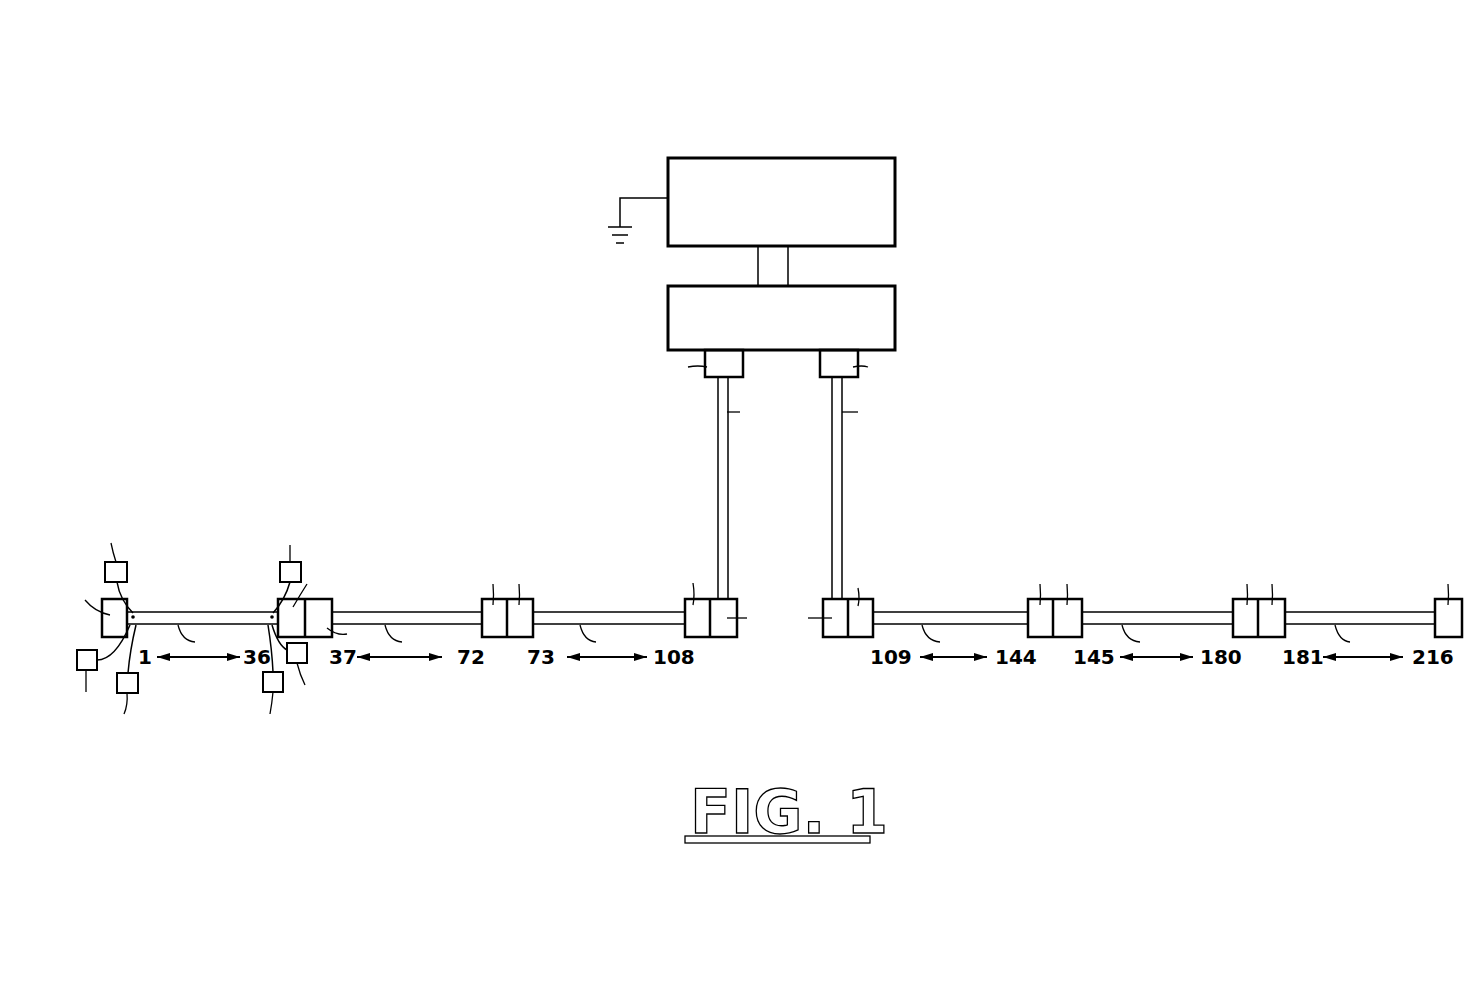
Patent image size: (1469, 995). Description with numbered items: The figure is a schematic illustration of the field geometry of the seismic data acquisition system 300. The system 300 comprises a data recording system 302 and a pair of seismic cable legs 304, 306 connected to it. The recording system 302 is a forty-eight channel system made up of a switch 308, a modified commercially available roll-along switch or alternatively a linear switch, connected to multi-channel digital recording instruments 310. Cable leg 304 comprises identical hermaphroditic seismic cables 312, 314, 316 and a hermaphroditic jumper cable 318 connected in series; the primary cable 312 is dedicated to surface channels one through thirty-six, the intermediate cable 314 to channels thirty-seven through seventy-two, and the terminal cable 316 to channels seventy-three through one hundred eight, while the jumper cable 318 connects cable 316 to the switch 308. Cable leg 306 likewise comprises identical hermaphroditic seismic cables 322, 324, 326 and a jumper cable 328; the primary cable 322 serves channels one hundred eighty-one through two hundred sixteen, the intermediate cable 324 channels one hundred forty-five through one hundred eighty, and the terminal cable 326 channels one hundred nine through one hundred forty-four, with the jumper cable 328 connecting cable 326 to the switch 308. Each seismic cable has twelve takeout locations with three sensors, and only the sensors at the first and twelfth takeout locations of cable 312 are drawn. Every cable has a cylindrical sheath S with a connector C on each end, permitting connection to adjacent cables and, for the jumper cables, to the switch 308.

The seismic data acquisition system 300 is at (1140, 358).
The data recording system 302 is at (948, 232).
The cable leg 304 is at (390, 483).
The cable leg 306 is at (1113, 498).
The switch 308 is at (895, 321).
The recording instruments 310 is at (895, 193).
The primary cable 312 is at (150, 618).
The intermediate cable 314 is at (343, 618).
The terminal cable 316 is at (553, 618).
The jumper cable 318 is at (718, 460).
The primary cable 322 is at (1420, 618).
The intermediate cable 324 is at (1217, 618).
The terminal cable 326 is at (892, 618).
The jumper cable 328 is at (842, 457).